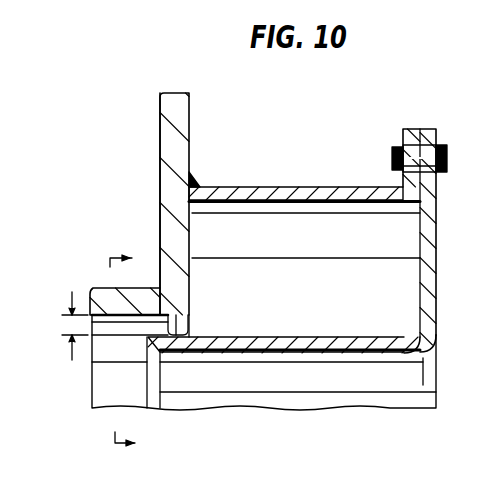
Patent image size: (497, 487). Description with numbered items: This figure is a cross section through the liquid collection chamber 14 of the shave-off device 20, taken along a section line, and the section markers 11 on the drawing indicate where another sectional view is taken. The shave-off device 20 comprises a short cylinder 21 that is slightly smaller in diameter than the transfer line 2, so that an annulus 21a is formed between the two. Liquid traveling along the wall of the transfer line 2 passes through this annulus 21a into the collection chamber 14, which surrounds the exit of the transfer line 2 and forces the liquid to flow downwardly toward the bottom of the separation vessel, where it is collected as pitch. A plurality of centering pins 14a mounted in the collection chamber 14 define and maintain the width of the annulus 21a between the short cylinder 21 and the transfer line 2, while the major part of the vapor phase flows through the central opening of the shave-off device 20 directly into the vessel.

The transfer line 2 is at (90, 290).
The shave-off device 20 is at (90, 265).
The section line XI-XI 11 is at (134, 351).
The collection chamber 14 is at (338, 291).
The centering pins 14a is at (190, 329).
The short cylinder 21 is at (157, 396).
The annulus 21a is at (68, 324).